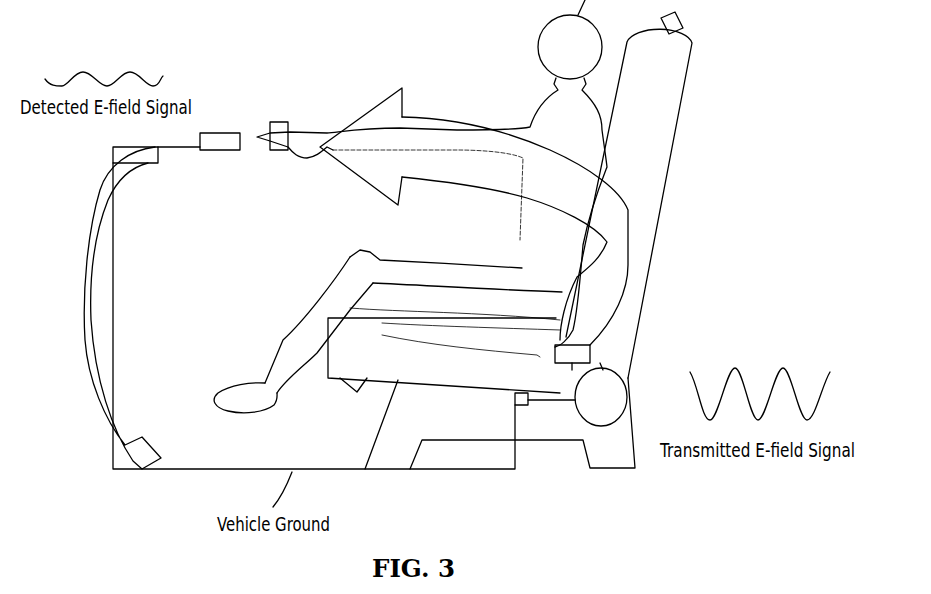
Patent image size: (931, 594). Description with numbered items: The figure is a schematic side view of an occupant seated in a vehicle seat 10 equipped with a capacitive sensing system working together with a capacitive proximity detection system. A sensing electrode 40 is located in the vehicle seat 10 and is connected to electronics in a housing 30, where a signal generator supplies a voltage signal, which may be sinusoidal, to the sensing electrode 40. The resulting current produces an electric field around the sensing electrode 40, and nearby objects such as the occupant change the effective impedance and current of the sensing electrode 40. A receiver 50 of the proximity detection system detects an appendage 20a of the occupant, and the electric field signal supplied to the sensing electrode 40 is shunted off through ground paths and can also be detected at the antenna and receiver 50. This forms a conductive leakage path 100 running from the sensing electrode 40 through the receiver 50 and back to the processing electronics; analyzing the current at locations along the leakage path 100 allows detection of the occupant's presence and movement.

The vehicle seat 10 is at (677, 55).
The appendage 20a is at (282, 117).
The housing 30 is at (572, 395).
The sensing electrode 40 is at (605, 328).
The receiver 50 is at (218, 117).
The leakage path 100 is at (122, 398).